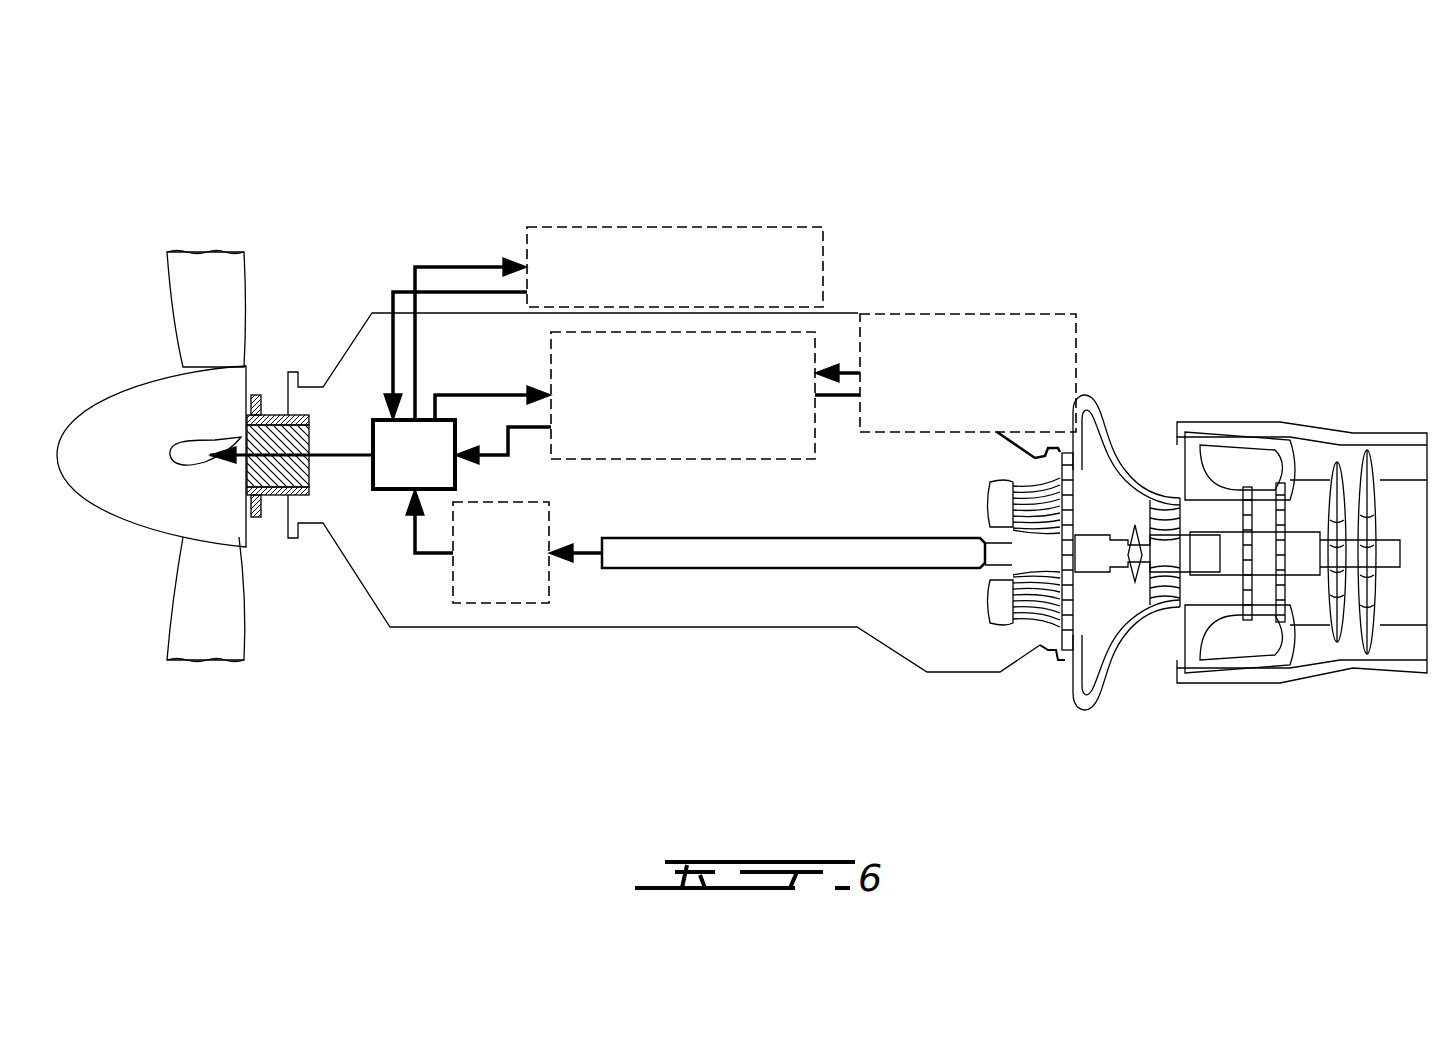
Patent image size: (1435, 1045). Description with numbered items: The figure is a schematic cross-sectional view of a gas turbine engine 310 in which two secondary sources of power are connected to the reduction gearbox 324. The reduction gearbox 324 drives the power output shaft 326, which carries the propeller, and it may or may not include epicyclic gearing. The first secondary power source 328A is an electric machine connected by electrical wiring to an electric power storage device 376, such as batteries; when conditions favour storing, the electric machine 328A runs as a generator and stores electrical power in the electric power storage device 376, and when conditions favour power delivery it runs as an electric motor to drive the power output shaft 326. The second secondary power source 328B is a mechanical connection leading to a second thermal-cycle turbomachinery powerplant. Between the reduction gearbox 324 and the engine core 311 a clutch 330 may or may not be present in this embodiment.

The gas turbine engine 310 is at (1245, 203).
The engine core 311 is at (1312, 697).
The reduction gearbox 324 is at (375, 414).
The power output shaft 326 is at (267, 413).
The first secondary power source 328A is at (765, 227).
The second secondary power source 328B is at (815, 353).
The clutch 330 is at (492, 603).
The electric power storage device 376 is at (1038, 314).